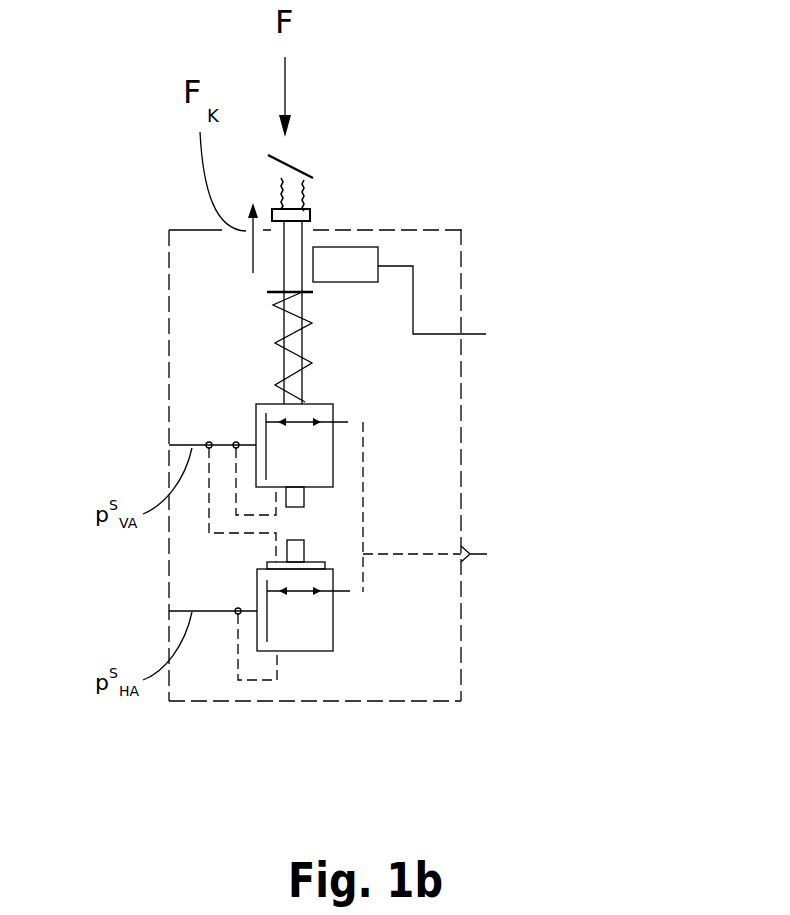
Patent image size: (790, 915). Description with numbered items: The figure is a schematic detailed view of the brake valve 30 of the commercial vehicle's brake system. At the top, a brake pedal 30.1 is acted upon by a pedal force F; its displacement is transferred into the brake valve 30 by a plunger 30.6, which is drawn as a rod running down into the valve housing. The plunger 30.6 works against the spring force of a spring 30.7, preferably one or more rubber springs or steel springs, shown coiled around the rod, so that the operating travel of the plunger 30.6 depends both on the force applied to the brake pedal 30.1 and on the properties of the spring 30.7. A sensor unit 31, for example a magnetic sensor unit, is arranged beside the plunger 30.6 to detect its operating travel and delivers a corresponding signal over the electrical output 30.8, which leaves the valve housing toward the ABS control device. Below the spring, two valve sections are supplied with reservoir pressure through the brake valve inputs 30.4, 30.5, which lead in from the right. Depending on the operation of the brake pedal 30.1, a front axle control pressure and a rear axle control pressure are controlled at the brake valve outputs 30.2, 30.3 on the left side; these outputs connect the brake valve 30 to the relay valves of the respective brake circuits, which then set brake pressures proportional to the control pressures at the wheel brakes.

The brake valve 30 is at (184, 230).
The brake pedal 30.1 is at (307, 168).
The brake valve output 30.2 is at (169, 445).
The brake valve output 30.3 is at (169, 611).
The brake valve input 30.4 is at (333, 473).
The brake valve input 30.5 is at (333, 639).
The plunger 30.6 is at (283, 280).
The spring 30.7 is at (283, 344).
The electrical output 30.8 is at (473, 334).
The sensor unit 31 is at (385, 252).